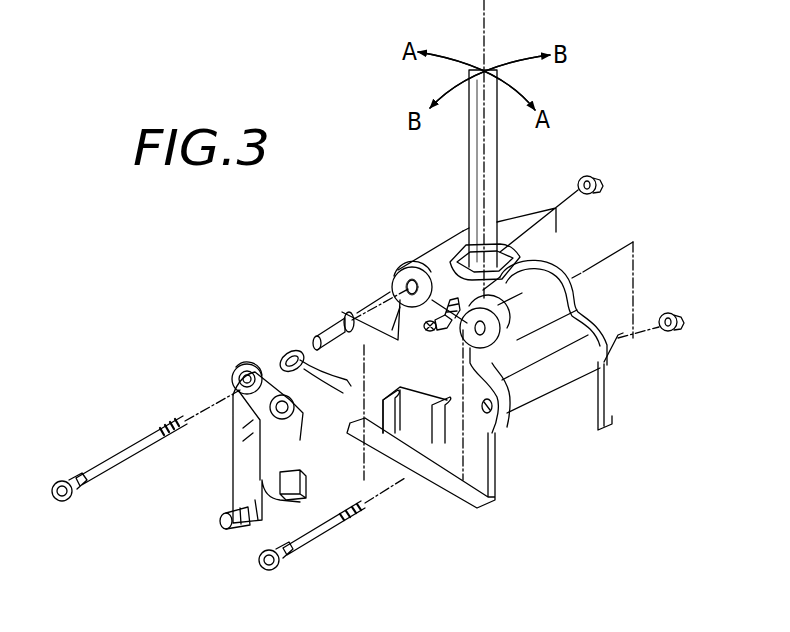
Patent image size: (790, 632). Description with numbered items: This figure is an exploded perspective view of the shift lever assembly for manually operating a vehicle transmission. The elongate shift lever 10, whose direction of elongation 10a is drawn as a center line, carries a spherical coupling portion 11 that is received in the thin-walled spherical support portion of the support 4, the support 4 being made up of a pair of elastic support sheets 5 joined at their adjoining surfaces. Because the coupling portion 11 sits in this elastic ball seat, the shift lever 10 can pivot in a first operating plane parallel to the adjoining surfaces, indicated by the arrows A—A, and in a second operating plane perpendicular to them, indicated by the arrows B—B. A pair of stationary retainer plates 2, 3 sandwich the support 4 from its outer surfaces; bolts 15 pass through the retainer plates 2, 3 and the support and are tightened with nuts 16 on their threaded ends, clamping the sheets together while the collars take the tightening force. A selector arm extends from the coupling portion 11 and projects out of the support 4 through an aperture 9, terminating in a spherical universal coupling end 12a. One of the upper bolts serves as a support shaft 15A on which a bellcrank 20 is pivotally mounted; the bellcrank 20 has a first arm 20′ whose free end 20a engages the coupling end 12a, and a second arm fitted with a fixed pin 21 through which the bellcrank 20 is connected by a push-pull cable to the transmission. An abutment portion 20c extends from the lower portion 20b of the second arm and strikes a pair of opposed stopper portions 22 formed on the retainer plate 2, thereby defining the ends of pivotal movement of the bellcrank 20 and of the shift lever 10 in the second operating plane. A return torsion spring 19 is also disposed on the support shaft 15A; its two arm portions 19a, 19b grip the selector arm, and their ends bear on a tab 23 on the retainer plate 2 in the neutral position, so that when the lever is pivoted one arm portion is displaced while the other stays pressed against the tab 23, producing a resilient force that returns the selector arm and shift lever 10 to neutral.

The retainer plate 2 is at (490, 460).
The retainer plate 3 is at (585, 402).
The support 4 is at (533, 421).
The support sheet 5 is at (460, 240).
The aperture 9 is at (405, 312).
The shift lever 10 is at (502, 207).
The direction of elongation 10a is at (487, 17).
The spherical coupling portion 11 is at (520, 254).
The spherical universal coupling end 12a is at (425, 325).
The bolt 15 is at (315, 533).
The support shaft 15A is at (107, 468).
The nut 16 is at (598, 187).
The return torsion spring 19 is at (285, 345).
The arm portion 19a is at (337, 388).
The arm portion 19b is at (330, 335).
The bellcrank 20 is at (222, 417).
The first arm 20′ is at (265, 356).
The free end 20a is at (296, 422).
The lever end 20b is at (258, 527).
The abutment portion 20c is at (301, 487).
The pin 21 is at (222, 525).
The stopper portion 22 is at (381, 420).
The tab 23 is at (450, 330).